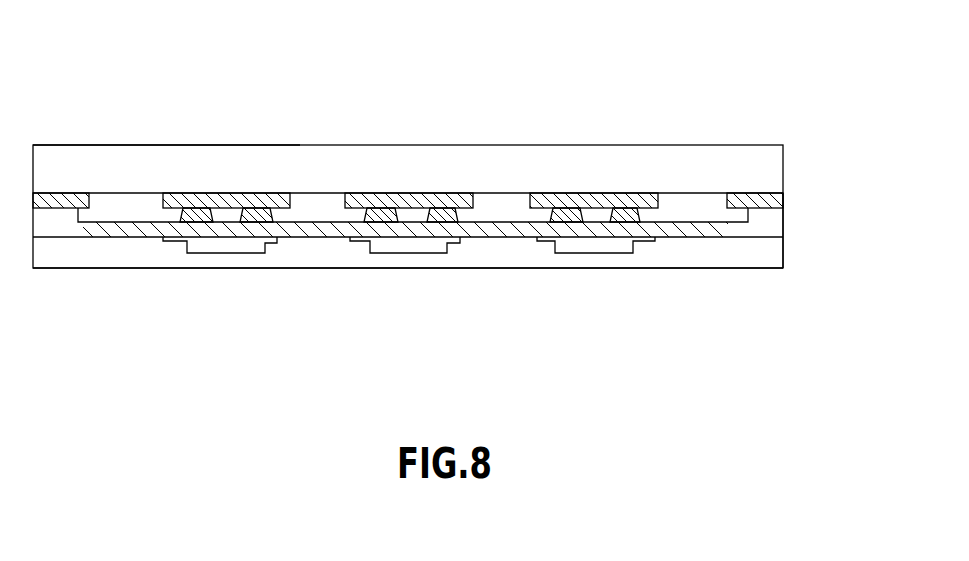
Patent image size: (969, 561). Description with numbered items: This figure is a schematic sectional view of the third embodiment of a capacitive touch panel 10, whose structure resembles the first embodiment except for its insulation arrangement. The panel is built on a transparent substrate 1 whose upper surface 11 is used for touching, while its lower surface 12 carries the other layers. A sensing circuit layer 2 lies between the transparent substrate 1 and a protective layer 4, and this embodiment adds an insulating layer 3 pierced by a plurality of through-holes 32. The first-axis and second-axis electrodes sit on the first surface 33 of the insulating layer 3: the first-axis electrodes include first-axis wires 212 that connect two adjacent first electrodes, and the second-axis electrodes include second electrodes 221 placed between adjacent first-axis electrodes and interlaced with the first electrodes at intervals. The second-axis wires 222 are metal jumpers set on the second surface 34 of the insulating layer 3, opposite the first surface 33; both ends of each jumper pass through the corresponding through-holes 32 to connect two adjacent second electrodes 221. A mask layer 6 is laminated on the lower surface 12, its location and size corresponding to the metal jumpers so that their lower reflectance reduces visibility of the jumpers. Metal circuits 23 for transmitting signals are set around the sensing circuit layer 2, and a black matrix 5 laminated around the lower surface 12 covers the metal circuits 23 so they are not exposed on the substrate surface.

The capacitive touch panel 10 is at (800, 28).
The transparent substrate 1 is at (137, 173).
The upper surface 11 is at (132, 57).
The lower surface 12 is at (715, 190).
The sensing circuit layer 2 is at (460, 85).
The second electrodes 221 is at (312, 205).
The first-axis wires 212 is at (400, 213).
The second-axis wires 222 is at (225, 243).
The insulating layer 3 is at (326, 236).
The through-holes 32 is at (266, 214).
The first surface 33 is at (504, 218).
The second surface 34 is at (498, 241).
The protective layer 4 is at (142, 252).
The black matrix 5 is at (783, 200).
The metal circuits 23 is at (763, 215).
The mask layer 6 is at (600, 207).